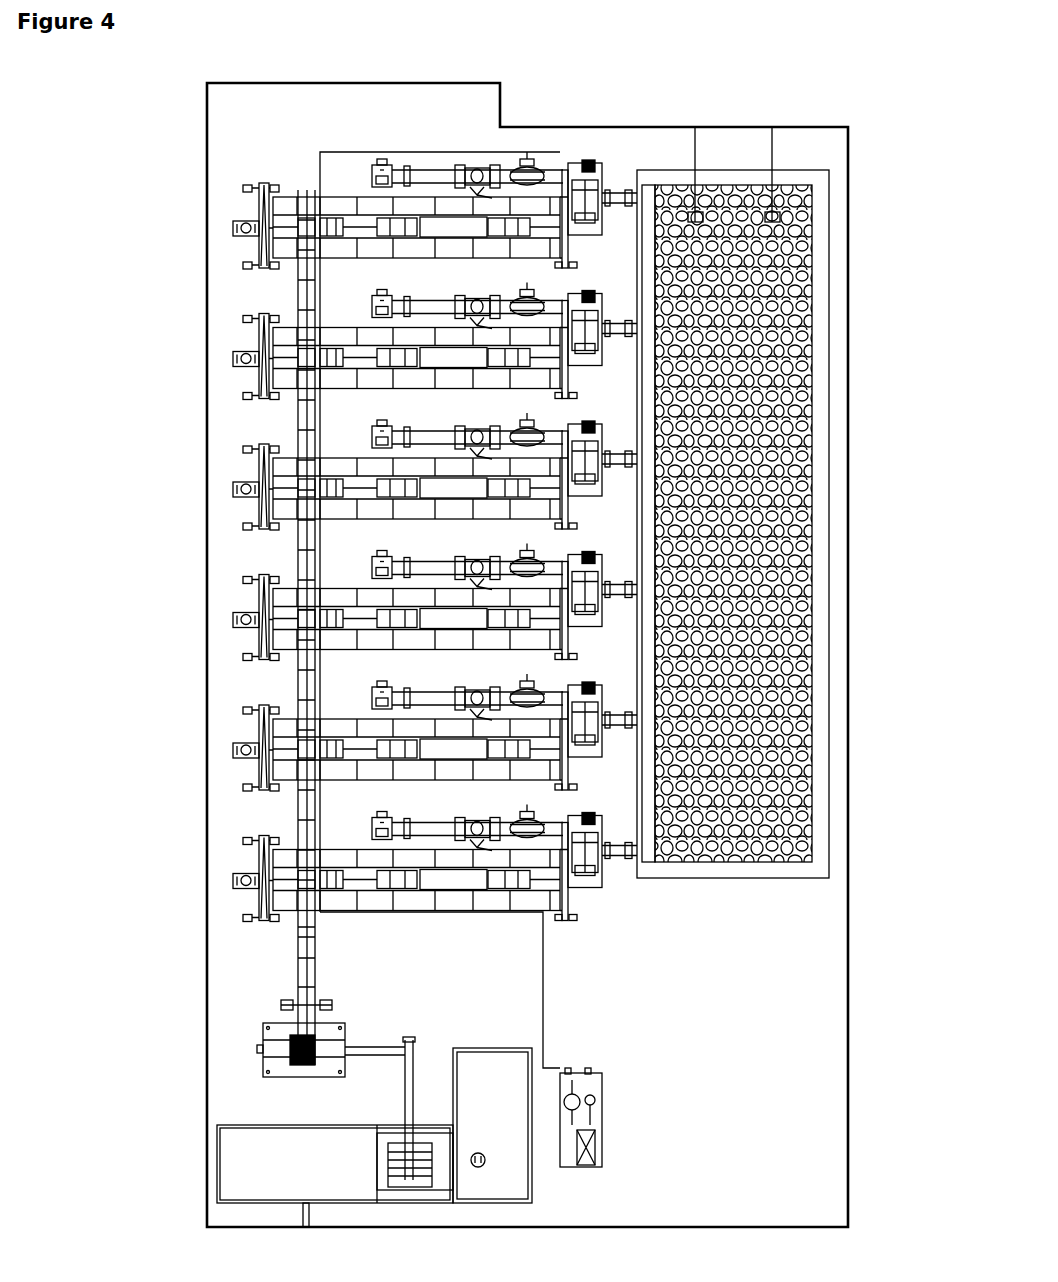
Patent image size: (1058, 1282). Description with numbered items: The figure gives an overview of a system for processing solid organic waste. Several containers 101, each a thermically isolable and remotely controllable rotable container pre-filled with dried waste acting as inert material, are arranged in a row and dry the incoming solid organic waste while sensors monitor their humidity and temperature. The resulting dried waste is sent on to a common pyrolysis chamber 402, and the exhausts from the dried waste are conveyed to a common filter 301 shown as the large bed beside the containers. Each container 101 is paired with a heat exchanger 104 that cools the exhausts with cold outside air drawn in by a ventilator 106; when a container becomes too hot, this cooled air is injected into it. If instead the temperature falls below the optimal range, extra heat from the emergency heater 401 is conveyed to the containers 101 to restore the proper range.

The container 101 is at (250, 198).
The heat exchanger 104 is at (482, 165).
The ventilator 106 is at (377, 165).
The filter 301 is at (782, 426).
The emergency heater 401 is at (602, 1103).
The pyrolysis chamber 402 is at (230, 1150).